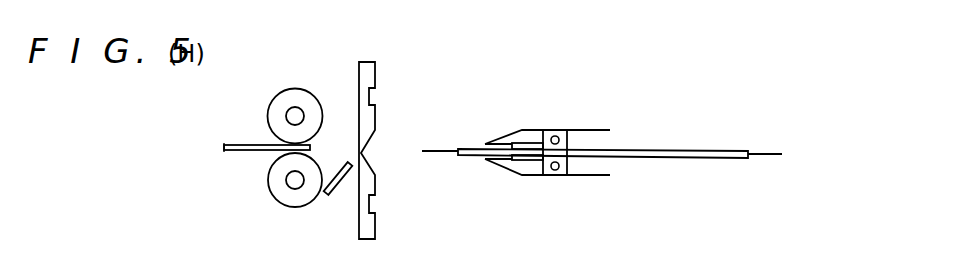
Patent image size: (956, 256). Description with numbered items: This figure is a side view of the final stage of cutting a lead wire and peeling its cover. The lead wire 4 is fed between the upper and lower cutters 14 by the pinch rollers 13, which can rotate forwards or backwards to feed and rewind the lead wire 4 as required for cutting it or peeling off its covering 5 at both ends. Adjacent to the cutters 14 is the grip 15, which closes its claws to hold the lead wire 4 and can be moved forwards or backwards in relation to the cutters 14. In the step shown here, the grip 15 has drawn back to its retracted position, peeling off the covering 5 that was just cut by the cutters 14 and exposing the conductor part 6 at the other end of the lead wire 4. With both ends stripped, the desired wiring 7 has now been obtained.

The lead wire 4 is at (245, 144).
The covering 5 is at (334, 196).
The conductor part 6 is at (431, 153).
The wiring 7 is at (658, 147).
The pinch rollers 13 is at (283, 90).
The cutters 14 is at (376, 68).
The grip 15 is at (542, 130).